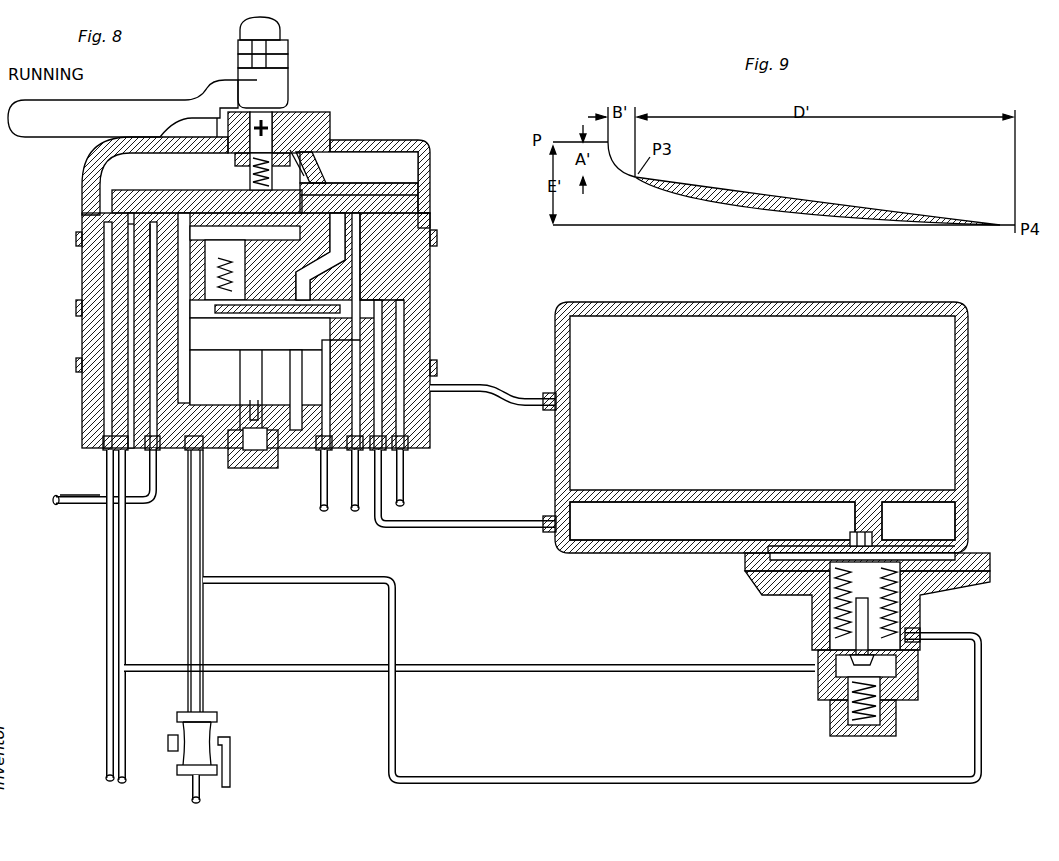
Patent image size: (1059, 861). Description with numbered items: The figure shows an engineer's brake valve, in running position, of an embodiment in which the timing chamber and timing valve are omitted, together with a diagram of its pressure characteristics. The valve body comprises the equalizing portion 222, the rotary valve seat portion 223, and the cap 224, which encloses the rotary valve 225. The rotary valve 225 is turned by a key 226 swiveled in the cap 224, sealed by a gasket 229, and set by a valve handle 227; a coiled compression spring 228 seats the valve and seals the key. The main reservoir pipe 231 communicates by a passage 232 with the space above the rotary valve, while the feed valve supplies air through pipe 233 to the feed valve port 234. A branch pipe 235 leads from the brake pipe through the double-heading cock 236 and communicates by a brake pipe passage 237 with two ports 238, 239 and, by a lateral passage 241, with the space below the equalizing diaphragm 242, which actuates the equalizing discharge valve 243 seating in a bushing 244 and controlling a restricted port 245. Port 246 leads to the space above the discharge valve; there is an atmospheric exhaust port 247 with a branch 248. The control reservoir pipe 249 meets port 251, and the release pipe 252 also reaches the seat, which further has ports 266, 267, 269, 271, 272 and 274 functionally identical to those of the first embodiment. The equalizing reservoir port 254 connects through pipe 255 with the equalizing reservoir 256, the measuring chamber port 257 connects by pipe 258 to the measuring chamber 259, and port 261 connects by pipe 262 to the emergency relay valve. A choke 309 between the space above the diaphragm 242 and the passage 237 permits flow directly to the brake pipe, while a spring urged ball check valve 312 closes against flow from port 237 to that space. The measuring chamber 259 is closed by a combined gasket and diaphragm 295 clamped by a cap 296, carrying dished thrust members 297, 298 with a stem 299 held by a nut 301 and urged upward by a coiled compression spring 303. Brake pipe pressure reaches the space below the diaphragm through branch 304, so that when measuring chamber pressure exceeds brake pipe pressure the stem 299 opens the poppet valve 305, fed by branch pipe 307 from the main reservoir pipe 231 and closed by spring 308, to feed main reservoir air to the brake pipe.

The equalizing portion 222 is at (436, 336).
The rotary valve seat portion 223 is at (437, 240).
The cap 224 is at (408, 152).
The rotary valve 225 is at (378, 192).
The key 226 is at (280, 112).
The valve handle 227 is at (122, 114).
The coiled compression spring 228 is at (222, 112).
The gasket 229 is at (240, 150).
The main reservoir pipe 231 is at (106, 583).
The passage 232 is at (150, 292).
The feed valve pipe 233 is at (66, 496).
The feed valve port 234 is at (128, 270).
The branch pipe 235 is at (204, 624).
The double-heading cock 236 is at (208, 738).
The brake pipe passage 237 is at (214, 282).
The port 238 is at (104, 235).
The port 239 is at (150, 222).
The lateral passage 241 is at (82, 364).
The equalizing diaphragm 242 is at (82, 315).
The equalizing discharge valve 243 is at (302, 450).
The bushing 244 is at (232, 450).
The restricted port 245 is at (256, 468).
The port 246 is at (280, 205).
The atmospheric exhaust port 247 is at (252, 170).
The branch 248 is at (195, 228).
The control reservoir pipe 249 is at (321, 508).
The port 251 is at (318, 178).
The release pipe 252 is at (353, 512).
The equalizing reservoir port 254 is at (365, 185).
The pipe 255 is at (482, 387).
The equalizing reservoir 256 is at (755, 427).
The measuring chamber port 257 is at (373, 277).
The pipe 258 is at (460, 520).
The measuring chamber 259 is at (712, 521).
The port 261 is at (424, 214).
The pipe 262 is at (404, 484).
The port 266 is at (178, 345).
The port 267 is at (100, 205).
The port 269 is at (185, 190).
The port 271 is at (325, 212).
The port 272 is at (312, 150).
The port 274 is at (292, 150).
The combined gasket and diaphragm 295 is at (990, 556).
The cap 296 is at (985, 572).
The dished thrust member 297 is at (905, 546).
The dished thrust member 298 is at (960, 592).
The stem 299 is at (814, 600).
The nut 301 is at (840, 538).
The coiled compression spring 303 is at (915, 612).
The branch 304 is at (397, 608).
The poppet valve 305 is at (852, 660).
The branch pipe 307 is at (465, 674).
The coiled compression spring 308 is at (868, 718).
The choke 309 is at (285, 305).
The spring urged ball check valve 312 is at (178, 224).